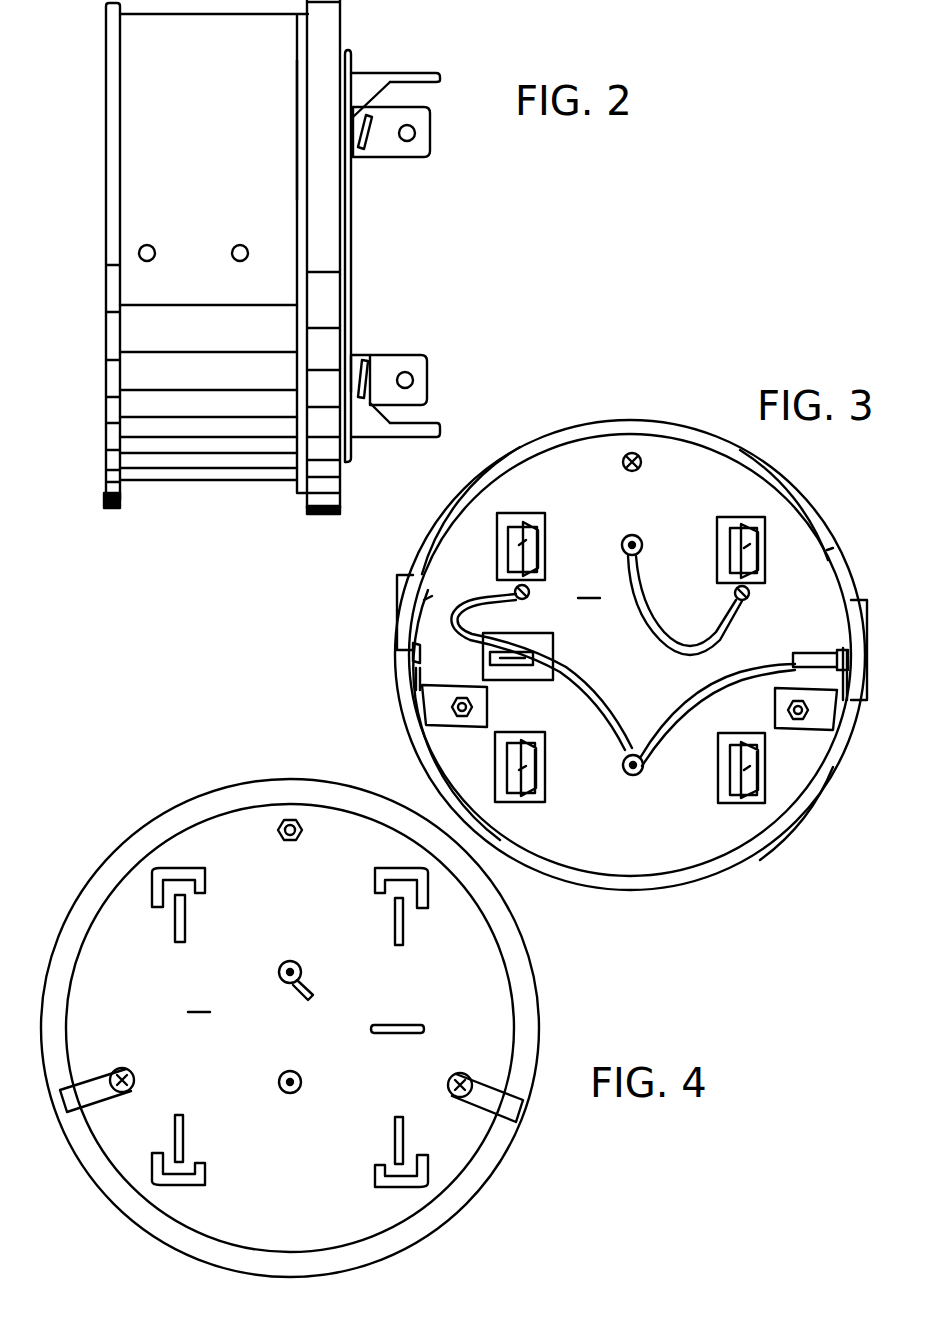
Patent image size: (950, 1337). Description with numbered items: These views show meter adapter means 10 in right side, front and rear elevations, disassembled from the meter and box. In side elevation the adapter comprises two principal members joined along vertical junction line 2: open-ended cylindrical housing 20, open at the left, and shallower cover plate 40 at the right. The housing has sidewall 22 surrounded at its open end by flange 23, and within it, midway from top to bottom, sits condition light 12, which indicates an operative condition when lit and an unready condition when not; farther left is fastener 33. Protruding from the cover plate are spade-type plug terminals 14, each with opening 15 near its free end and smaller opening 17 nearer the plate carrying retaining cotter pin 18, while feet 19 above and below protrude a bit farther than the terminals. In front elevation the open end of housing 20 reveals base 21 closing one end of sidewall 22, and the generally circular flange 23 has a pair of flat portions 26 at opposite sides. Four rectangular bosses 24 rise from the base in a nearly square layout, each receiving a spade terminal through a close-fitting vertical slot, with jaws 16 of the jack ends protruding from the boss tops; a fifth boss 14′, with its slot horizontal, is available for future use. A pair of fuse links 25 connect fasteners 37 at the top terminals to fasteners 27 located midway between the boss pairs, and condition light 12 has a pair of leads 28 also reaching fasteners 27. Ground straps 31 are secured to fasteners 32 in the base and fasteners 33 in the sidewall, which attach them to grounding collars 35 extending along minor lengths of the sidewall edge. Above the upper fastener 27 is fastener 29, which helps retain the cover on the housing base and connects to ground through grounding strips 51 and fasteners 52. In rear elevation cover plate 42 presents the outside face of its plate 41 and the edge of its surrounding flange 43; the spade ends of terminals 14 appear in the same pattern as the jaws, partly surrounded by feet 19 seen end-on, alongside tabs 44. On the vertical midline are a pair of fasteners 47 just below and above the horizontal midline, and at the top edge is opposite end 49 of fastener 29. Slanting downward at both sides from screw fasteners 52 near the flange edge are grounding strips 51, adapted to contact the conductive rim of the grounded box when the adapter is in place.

In FIG. 2, the junction line 2 is at (296, 112).
In FIG. 2, the adapter means 10 is at (162, 520).
In FIG. 2, the condition light 12 is at (240, 244).
In FIG. 3, the condition light 12 is at (812, 656).
In FIG. 2, the plug terminals 14 is at (431, 140).
In FIG. 3, the bracket 14′ is at (536, 680).
In FIG. 2, the opening 15 is at (410, 142).
In FIG. 3, the jaws 16 is at (546, 536).
In FIG. 2, the smaller opening 17 is at (398, 108).
In FIG. 2, the retaining cotter pin 18 is at (366, 151).
In FIG. 2, the feet 19 is at (404, 77).
In FIG. 4, the feet 19 is at (374, 879).
In FIG. 2, the housing 20 is at (102, 372).
In FIG. 3, the housing 20 is at (726, 876).
In FIG. 3, the base 21 is at (588, 588).
In FIG. 2, the sidewall 22 is at (250, 482).
In FIG. 2, the flange 23 is at (106, 506).
In FIG. 3, the flange 23 is at (781, 484).
In FIG. 3, the rectangular bosses 24 is at (531, 530).
In FIG. 3, the fuse links 25 is at (606, 712).
In FIG. 3, the flat portions 26 is at (396, 636).
In FIG. 3, the fasteners 27 is at (621, 551).
In FIG. 3, the leads 28 is at (660, 612).
In FIG. 3, the fastener 29 is at (641, 454).
In FIG. 3, the ground straps 31 is at (421, 681).
In FIG. 3, the fasteners 32 is at (462, 722).
In FIG. 2, the fasteners 33 is at (147, 244).
In FIG. 3, the fasteners 33 is at (421, 656).
In FIG. 3, the grounding collars 35 is at (423, 576).
In FIG. 3, the fasteners 37 is at (528, 598).
In FIG. 2, the cover plate 40 is at (354, 264).
In FIG. 4, the cover plate 40 is at (128, 1224).
In FIG. 4, the plate 41 is at (198, 1002).
In FIG. 2, the cover plate 42 is at (298, 496).
In FIG. 2, the flange 43 is at (334, 502).
In FIG. 4, the flange 43 is at (272, 800).
In FIG. 4, the tab 44 is at (394, 920).
In FIG. 4, the fasteners 47 is at (299, 964).
In FIG. 4, the opposite end of fastener 49 is at (303, 831).
In FIG. 4, the grounding strips 51 is at (106, 1078).
In FIG. 4, the screw fasteners 52 is at (131, 1070).